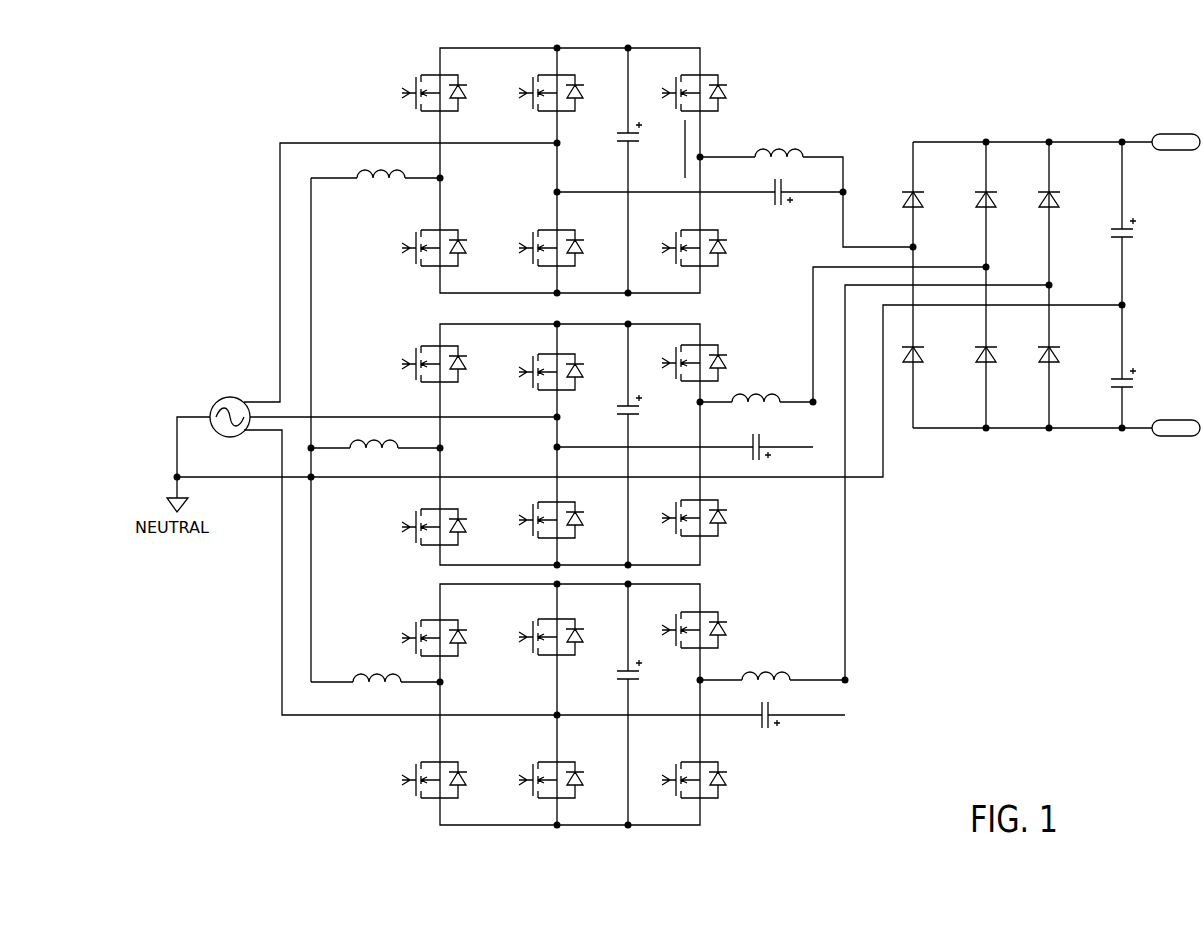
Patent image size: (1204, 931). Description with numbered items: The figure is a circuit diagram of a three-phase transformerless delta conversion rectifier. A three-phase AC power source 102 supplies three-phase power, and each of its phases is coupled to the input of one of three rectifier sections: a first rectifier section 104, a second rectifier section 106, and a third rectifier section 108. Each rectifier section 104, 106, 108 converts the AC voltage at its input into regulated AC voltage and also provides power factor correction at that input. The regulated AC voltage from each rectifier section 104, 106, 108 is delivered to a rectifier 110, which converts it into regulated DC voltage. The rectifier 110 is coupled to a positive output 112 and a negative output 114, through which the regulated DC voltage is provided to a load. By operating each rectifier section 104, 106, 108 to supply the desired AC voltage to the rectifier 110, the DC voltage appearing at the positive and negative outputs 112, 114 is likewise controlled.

The three-phase AC power source 102 is at (226, 397).
The first rectifier section 104 is at (362, 83).
The second rectifier section 106 is at (395, 325).
The third rectifier section 108 is at (390, 603).
The rectifier 110 is at (933, 115).
The positive output 112 is at (1167, 134).
The negative output 114 is at (1186, 420).